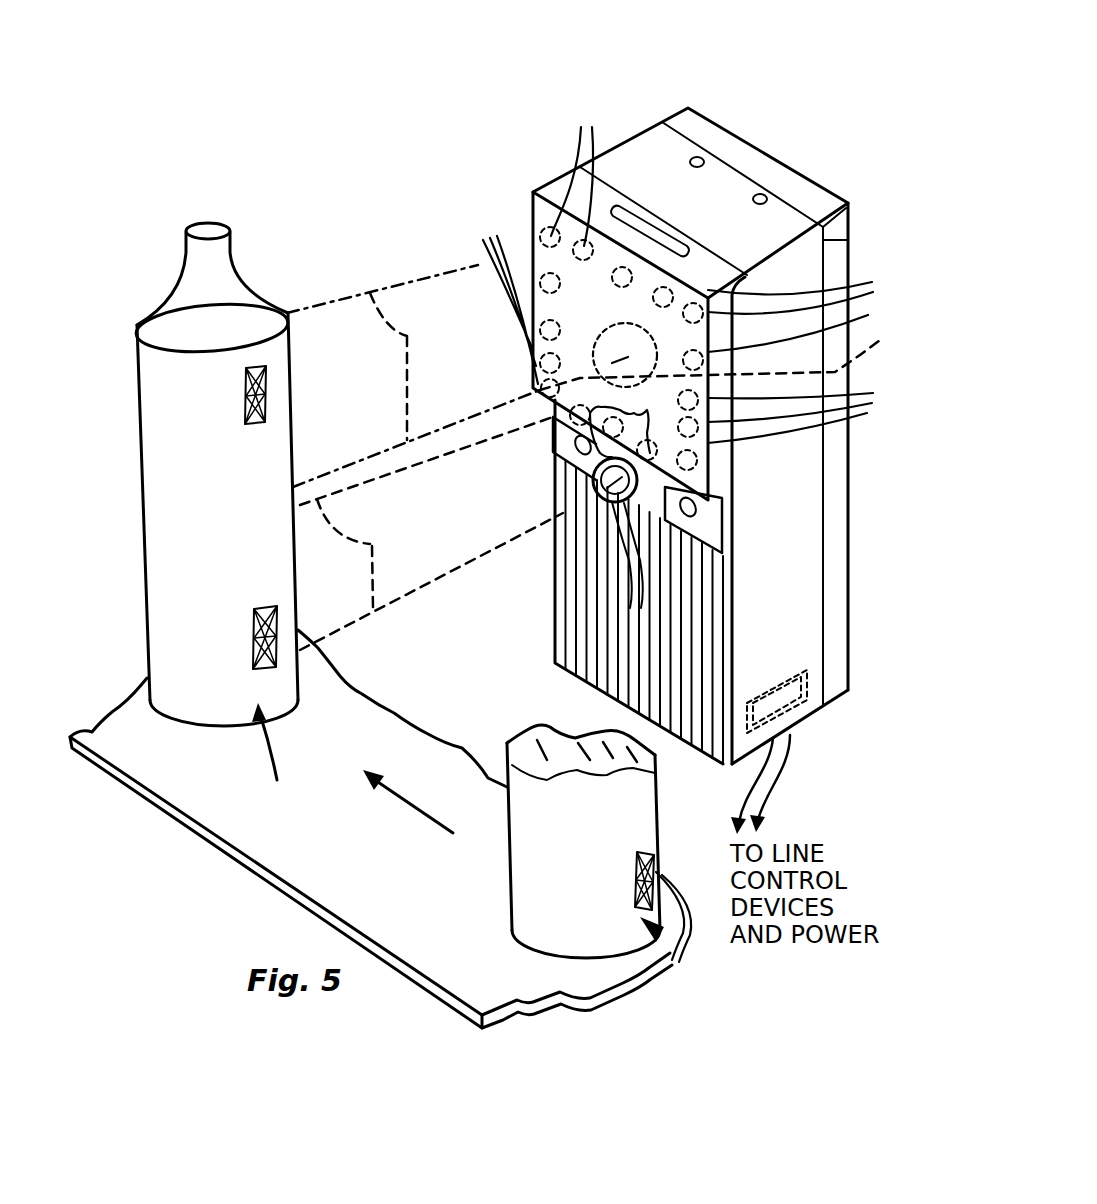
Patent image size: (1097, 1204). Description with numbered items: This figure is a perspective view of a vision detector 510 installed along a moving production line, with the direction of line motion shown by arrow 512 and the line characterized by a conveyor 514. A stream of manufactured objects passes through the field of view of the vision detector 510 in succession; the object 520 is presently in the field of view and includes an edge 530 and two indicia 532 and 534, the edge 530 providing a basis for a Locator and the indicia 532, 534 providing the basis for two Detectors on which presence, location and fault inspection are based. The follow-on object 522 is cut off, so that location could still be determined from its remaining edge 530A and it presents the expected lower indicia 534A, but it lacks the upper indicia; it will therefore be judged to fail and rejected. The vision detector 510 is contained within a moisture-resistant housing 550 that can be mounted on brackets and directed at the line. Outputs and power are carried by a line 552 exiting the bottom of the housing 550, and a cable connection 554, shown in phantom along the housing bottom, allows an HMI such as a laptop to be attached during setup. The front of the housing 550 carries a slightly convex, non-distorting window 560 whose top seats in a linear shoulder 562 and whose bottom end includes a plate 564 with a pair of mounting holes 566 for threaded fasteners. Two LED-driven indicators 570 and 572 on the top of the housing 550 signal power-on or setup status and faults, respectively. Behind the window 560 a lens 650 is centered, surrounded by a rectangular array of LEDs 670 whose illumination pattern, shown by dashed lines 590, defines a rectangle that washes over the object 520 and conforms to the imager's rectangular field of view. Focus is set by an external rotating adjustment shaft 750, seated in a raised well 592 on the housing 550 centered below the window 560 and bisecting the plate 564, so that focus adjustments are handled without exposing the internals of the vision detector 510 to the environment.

The vision detector 510 is at (669, 91).
The arrow 512 is at (414, 801).
The conveyor 514 is at (429, 736).
The object 520 is at (286, 753).
The follow-on object 522 is at (684, 949).
The edge 530 is at (145, 444).
The remaining edge 530A is at (520, 882).
The indicia 532 is at (245, 394).
The indicia 534 is at (260, 634).
The lower indicia 534A is at (655, 871).
The housing 550 is at (786, 223).
The line 552 is at (833, 228).
The cable connection 554 is at (838, 263).
The window 560 is at (562, 186).
The linear shoulder 562 is at (628, 266).
The plate 564 is at (576, 442).
The mounting holes 566 is at (553, 433).
The indicator 570 is at (702, 158).
The indicator 572 is at (764, 193).
The illumination pattern 590 is at (407, 336).
The raised well 592 is at (652, 535).
The lens 650 is at (761, 354).
The LEDs 670 is at (678, 288).
The adjustment shaft 750 is at (630, 580).